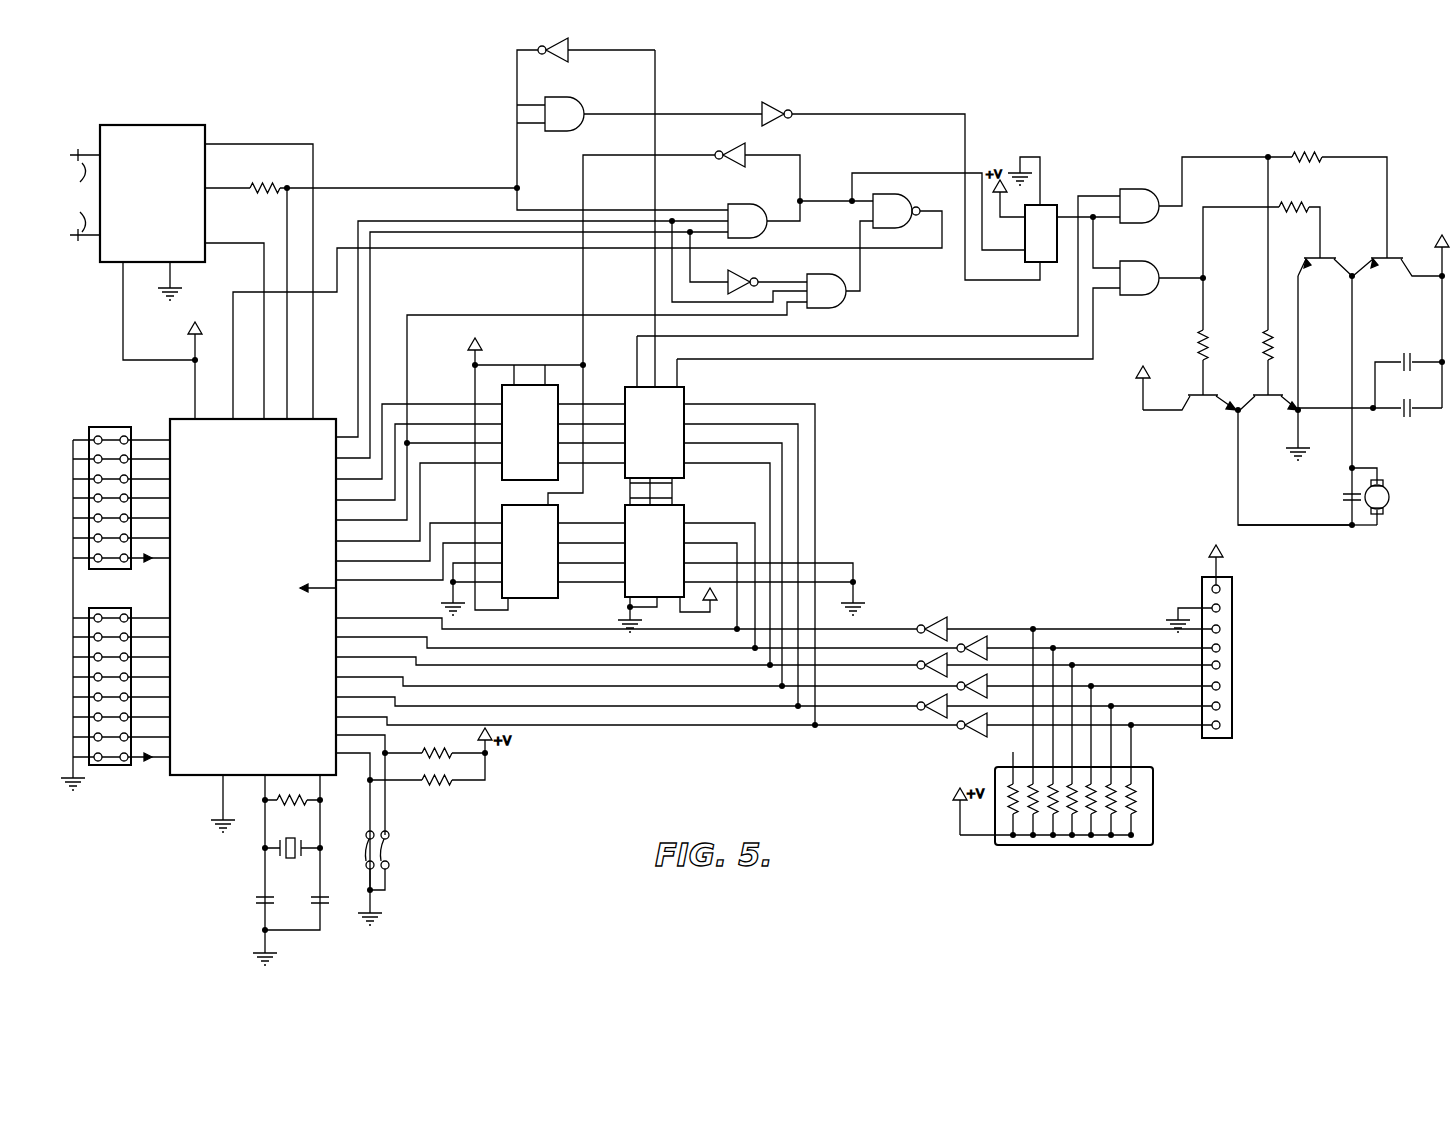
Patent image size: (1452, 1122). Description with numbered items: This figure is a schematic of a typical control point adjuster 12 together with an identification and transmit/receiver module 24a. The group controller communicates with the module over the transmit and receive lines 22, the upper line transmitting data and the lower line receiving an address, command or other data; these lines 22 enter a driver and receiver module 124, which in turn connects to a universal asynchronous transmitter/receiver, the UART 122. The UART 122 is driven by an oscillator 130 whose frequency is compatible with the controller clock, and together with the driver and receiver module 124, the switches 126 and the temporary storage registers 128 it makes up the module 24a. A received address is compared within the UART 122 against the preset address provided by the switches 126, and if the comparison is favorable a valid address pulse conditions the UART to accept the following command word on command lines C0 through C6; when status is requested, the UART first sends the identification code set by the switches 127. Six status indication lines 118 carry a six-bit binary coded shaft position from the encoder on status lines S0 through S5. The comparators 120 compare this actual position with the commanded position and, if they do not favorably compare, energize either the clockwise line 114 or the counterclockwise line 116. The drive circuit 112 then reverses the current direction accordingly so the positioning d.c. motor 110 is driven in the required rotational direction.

The control point adjuster 12 is at (1352, 572).
The transmit and receive lines 22 is at (82, 192).
The identification and transmit/receiver module 24a is at (100, 308).
The positioning d.c. motor 110 is at (1390, 497).
The drive circuit 112 is at (1190, 440).
The clockwise line 114 is at (905, 338).
The counterclockwise line 116 is at (900, 360).
The status indication lines 118 is at (1163, 600).
The comparators 120 is at (684, 480).
The universal asynchronous transmitter/receiver (UART) 122 is at (180, 778).
The driver and receiver module 124 is at (172, 125).
The switches 126 is at (140, 414).
The switches 127 is at (122, 770).
The temporary storage registers 128 is at (528, 386).
The oscillator 130 is at (284, 858).